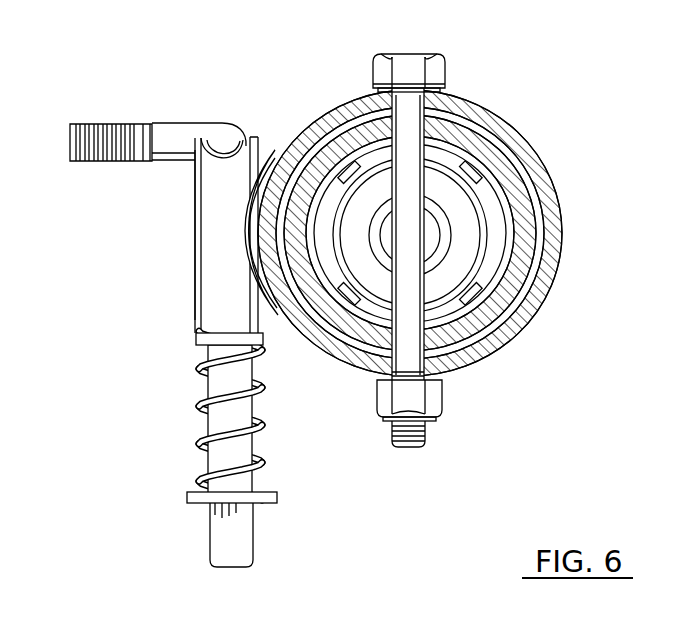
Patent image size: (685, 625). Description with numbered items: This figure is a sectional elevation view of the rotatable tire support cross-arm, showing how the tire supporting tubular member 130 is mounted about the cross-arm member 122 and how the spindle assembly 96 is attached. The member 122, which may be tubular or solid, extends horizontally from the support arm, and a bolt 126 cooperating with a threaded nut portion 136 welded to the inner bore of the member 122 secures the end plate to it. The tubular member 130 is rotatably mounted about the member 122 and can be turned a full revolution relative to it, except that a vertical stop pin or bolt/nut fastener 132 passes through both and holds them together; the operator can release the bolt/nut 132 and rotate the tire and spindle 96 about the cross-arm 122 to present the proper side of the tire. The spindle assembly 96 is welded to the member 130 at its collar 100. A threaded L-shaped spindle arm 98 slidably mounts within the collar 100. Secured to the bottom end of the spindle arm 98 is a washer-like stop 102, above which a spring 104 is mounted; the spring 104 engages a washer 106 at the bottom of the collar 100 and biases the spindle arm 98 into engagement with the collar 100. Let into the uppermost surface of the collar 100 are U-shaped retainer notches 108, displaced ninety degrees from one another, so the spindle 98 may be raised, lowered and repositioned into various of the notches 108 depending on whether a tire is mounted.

The spindle assembly 96 is at (182, 303).
The spindle arm 98 is at (199, 122).
The collar 100 is at (210, 226).
The washer-like stop 102 is at (272, 500).
The spring 104 is at (205, 405).
The washer 106 is at (200, 343).
The U-shaped retainer notches 108 is at (235, 143).
The member 122 is at (523, 200).
The bolt 126 is at (437, 240).
The tire supporting tubular member 130 is at (517, 130).
The bolt/nut fastener 132 is at (427, 446).
The threaded nut portion 136 is at (467, 258).